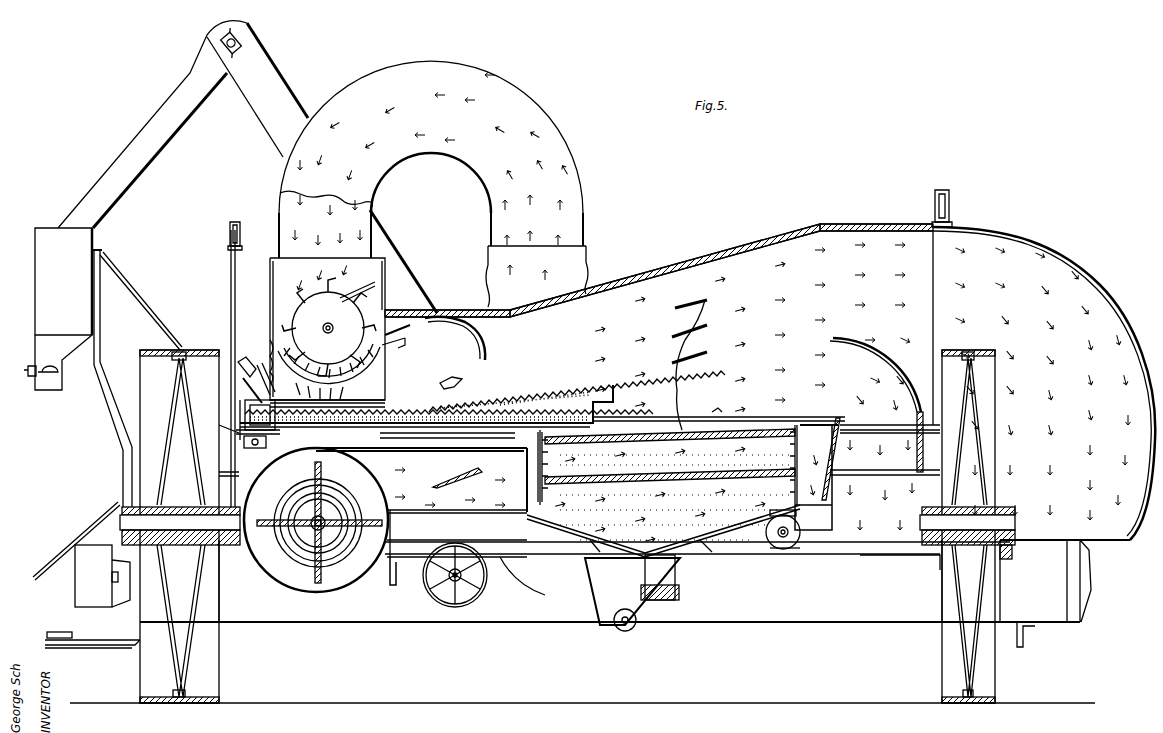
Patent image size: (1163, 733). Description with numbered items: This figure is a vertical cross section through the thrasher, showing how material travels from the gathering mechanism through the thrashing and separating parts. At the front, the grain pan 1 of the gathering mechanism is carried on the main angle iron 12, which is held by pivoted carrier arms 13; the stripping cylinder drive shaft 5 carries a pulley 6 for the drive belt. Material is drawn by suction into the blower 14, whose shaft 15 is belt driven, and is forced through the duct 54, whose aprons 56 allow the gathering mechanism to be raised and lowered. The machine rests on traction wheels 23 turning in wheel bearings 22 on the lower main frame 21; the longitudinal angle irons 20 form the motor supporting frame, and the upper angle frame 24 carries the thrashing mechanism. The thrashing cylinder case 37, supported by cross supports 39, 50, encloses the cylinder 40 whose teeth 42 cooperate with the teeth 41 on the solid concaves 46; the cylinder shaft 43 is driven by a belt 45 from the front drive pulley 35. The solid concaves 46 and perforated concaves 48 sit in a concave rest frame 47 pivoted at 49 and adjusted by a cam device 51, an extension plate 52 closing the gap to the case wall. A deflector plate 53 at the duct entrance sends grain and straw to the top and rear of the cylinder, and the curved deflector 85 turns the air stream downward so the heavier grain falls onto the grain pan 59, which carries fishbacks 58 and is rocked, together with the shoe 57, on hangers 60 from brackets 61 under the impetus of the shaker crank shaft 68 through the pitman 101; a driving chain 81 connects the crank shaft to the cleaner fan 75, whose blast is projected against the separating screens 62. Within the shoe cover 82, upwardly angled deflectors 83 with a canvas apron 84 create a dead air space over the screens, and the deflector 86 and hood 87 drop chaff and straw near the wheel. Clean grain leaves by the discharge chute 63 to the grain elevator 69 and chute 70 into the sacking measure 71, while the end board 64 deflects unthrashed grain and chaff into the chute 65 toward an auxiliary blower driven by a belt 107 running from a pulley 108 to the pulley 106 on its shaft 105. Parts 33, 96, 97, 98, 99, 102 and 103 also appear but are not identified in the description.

The grain pan 1 is at (310, 622).
The stripping cylinder drive shaft 5 is at (110, 577).
The pulley 6 is at (88, 556).
The main angle iron 12 is at (60, 632).
The pivoted carrier arms 13 is at (108, 640).
The blower 14 is at (548, 605).
The blower shaft 15 is at (455, 513).
The main frame longitudinal angle irons 20 is at (389, 580).
The lower main frame 21 is at (893, 558).
The wheel bearings 22 is at (1004, 511).
The traction wheels 23 is at (149, 360).
The upper angle frame 24 is at (231, 424).
The wheel hub 33 is at (432, 590).
The front drive pulley 35 is at (432, 600).
The thrashing cylinder case 37 is at (270, 310).
The cross supports 39 is at (370, 443).
The cylinder 40 is at (385, 310).
The concave teeth 41 is at (330, 368).
The cylinder teeth 42 is at (272, 322).
The cylinder shaft 43 is at (328, 328).
The belt 45 is at (425, 576).
The solid concaves 46 is at (327, 395).
The concave rest frame 47 is at (327, 397).
The perforated concaves 48 is at (440, 388).
The pivot 49 is at (398, 346).
The cross support 50 is at (400, 362).
The cam device 51 is at (280, 372).
The extension plate 52 is at (272, 356).
The deflector plate 53 is at (378, 282).
The duct 54 is at (495, 82).
The aprons 56 is at (583, 262).
The shoe 57 is at (510, 518).
The fishbacks 58 is at (482, 405).
The grain pan 59 is at (450, 444).
The hangers 60 is at (243, 398).
The brackets 61 is at (238, 377).
The separating screens 62 is at (662, 436).
The grain discharge chute 63 is at (645, 565).
The end board 64 is at (850, 494).
The grain and chaff chute 65 is at (832, 512).
The shaker crank shaft 68 is at (295, 445).
The grain elevator 69 is at (267, 70).
The chute 70 is at (132, 147).
The sacking measure 71 is at (40, 284).
The cleaner fan casing 75 is at (283, 585).
The driving chain 81 is at (1078, 282).
The grain separating shoe cover 82 is at (652, 263).
The upwardly angled deflectors 83 is at (700, 305).
The apron 84 is at (688, 392).
The curved deflector 85 is at (486, 342).
The deflector 86 is at (876, 405).
The hood 87 is at (718, 412).
The fan blades 96 is at (326, 478).
The fan shaft 97 is at (320, 515).
The wedge 98 is at (440, 480).
The pipe 99 is at (100, 312).
The pitman 101 is at (487, 449).
The fitting 102 is at (955, 224).
The fitting 103 is at (945, 192).
The blower shaft 105 is at (798, 540).
The pulley 106 is at (790, 550).
The belt 107 is at (340, 496).
The pulley 108 is at (290, 543).